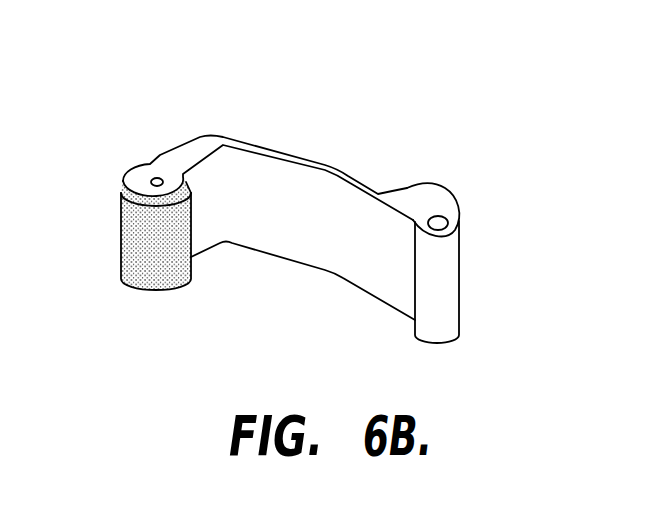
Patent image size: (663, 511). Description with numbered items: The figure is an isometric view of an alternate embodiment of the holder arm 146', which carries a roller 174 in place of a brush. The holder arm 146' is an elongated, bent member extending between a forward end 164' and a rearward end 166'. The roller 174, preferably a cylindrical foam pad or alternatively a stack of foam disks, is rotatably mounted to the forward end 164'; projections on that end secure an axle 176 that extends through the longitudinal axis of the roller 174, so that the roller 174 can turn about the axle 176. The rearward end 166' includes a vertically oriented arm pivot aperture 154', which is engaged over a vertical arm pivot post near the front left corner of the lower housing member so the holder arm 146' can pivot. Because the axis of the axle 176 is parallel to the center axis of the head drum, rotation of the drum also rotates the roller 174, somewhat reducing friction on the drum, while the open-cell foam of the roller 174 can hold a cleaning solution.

The roller 174 is at (143, 241).
The axle 176 is at (156, 180).
The forward end 164' is at (268, 137).
The rearward end 166' is at (452, 175).
The arm pivot aperture 154' is at (483, 193).
The holder arm 146' is at (303, 281).